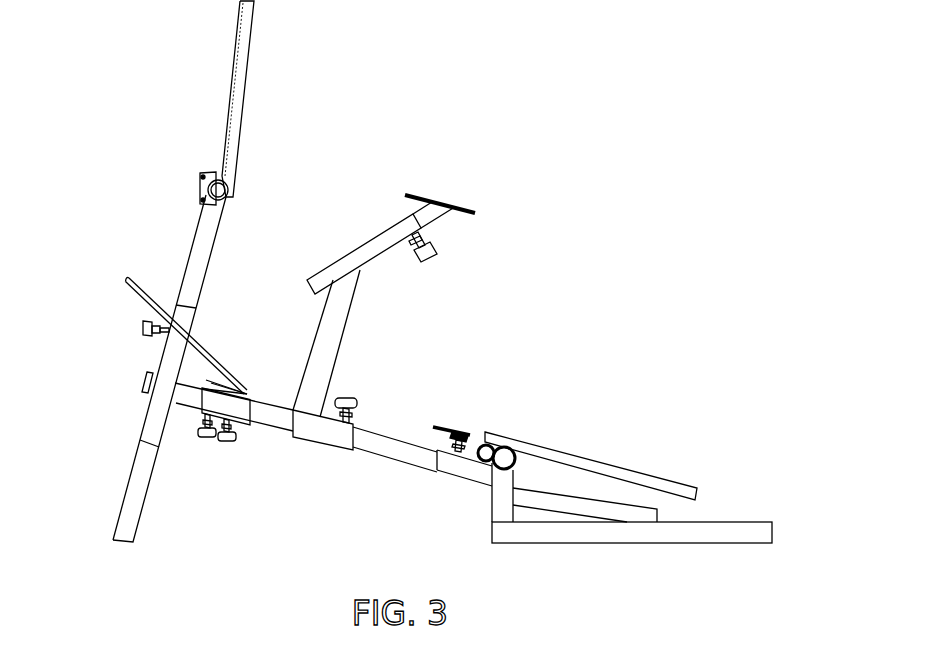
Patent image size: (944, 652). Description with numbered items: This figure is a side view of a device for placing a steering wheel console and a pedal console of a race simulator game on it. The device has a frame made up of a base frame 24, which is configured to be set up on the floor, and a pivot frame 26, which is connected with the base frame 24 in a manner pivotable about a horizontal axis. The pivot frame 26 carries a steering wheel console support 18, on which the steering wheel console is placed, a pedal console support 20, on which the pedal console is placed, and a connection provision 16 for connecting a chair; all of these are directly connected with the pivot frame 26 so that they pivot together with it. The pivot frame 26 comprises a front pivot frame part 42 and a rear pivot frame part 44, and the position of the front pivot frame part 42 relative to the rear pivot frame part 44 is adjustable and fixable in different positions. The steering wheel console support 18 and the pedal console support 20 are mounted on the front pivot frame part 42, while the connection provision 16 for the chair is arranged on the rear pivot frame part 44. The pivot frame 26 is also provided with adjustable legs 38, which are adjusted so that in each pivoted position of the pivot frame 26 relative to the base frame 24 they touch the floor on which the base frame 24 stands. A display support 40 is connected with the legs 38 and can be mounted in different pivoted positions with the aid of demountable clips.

The connection provision 16 is at (668, 485).
The steering wheel console support 18 is at (442, 232).
The pedal console support 20 is at (140, 280).
The base frame 24 is at (748, 530).
The pivot frame 26 is at (365, 460).
The adjustable legs 38 is at (140, 483).
The display support 40 is at (243, 68).
The front pivot frame part 42 is at (462, 470).
The rear pivot frame part 44 is at (405, 452).